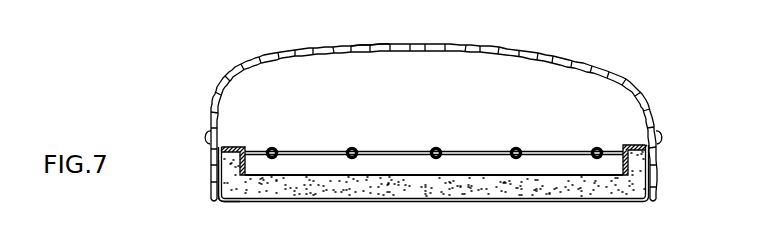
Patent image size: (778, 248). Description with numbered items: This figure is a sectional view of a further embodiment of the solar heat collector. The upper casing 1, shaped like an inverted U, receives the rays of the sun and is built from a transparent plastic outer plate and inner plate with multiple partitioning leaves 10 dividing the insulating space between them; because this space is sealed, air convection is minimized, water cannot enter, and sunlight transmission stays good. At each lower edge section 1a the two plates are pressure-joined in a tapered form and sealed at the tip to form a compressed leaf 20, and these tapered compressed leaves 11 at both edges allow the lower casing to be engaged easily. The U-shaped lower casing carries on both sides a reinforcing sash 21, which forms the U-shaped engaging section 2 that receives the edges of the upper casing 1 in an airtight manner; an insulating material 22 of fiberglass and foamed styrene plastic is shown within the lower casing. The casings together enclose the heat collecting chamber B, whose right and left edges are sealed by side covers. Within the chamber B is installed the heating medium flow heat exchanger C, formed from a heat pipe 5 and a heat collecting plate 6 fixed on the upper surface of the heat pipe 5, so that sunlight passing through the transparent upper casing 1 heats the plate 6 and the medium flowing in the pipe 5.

The upper casing 1 is at (498, 46).
The lower edge section of upper casing 1a is at (204, 114).
The partitioning leaves 10 is at (475, 47).
The heat collecting chamber B is at (373, 63).
The U-shaped engaging section 2 is at (212, 197).
The compressed leaf 20 is at (212, 183).
The reinforcing sash 21 is at (227, 152).
The insulating material 22 is at (402, 162).
The tapered compressed leaf 11 is at (571, 187).
The heating medium flow heat exchanger C is at (504, 148).
The heat collecting plate 6 is at (496, 148).
The heat pipe 5 is at (352, 162).